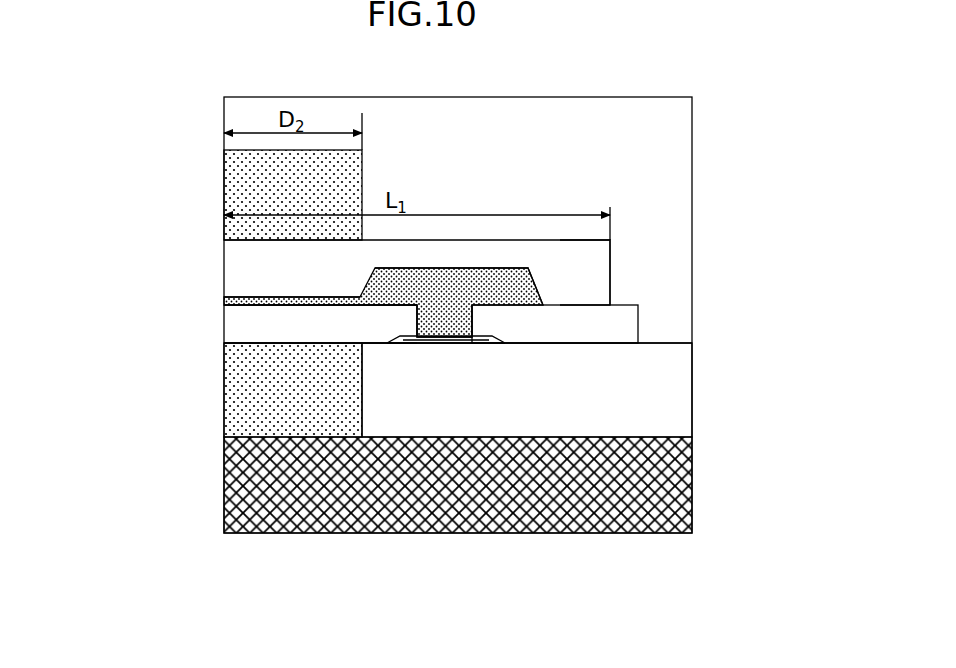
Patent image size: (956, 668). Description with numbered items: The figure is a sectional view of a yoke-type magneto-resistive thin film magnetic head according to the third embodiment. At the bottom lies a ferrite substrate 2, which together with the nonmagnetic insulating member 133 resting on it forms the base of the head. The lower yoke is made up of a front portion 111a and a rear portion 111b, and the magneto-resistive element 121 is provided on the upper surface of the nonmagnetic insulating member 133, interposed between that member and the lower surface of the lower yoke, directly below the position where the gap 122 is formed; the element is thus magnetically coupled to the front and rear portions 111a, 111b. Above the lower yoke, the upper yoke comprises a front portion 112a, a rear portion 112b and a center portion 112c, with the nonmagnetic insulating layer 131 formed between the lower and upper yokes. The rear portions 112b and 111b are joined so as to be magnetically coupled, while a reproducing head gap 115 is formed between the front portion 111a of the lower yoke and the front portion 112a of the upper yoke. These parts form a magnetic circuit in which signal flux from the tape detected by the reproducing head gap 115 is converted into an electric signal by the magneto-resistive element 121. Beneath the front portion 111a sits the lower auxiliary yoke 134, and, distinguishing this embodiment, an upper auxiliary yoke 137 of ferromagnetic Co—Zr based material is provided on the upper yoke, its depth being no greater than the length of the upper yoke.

The upper auxiliary yoke 137 is at (250, 193).
The front portion of the upper yoke 112a is at (255, 273).
The rear portion of the upper yoke 112b is at (605, 262).
The center portion of the upper yoke 112c is at (476, 253).
The gap 122 is at (447, 313).
The nonmagnetic insulating layer 131 is at (520, 292).
The reproducing head gap 115 is at (250, 303).
The front portion of the lower yoke 111a is at (248, 323).
The rear portion of the lower yoke 111b is at (605, 327).
The magneto-resistive element 121 is at (413, 344).
The lower auxiliary yoke 134 is at (248, 388).
The nonmagnetic insulating member 133 is at (670, 398).
The substrate 2 is at (670, 477).